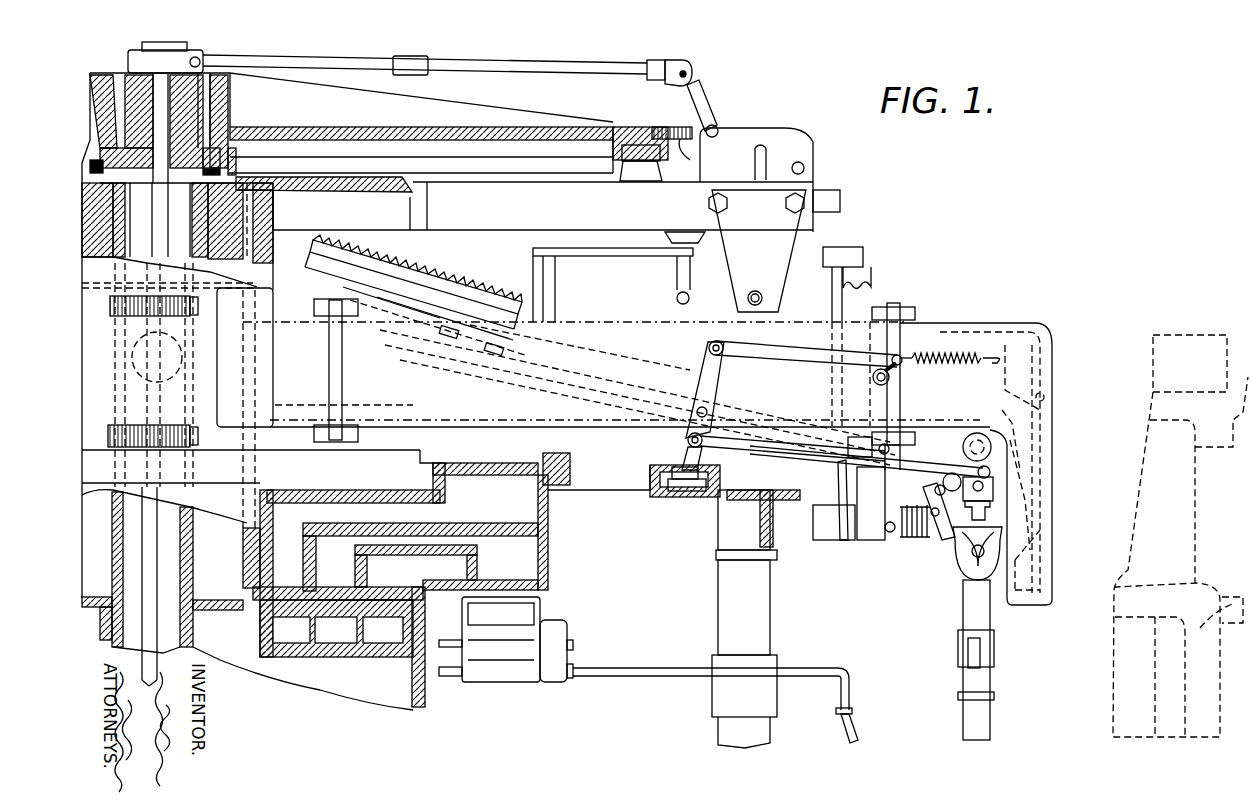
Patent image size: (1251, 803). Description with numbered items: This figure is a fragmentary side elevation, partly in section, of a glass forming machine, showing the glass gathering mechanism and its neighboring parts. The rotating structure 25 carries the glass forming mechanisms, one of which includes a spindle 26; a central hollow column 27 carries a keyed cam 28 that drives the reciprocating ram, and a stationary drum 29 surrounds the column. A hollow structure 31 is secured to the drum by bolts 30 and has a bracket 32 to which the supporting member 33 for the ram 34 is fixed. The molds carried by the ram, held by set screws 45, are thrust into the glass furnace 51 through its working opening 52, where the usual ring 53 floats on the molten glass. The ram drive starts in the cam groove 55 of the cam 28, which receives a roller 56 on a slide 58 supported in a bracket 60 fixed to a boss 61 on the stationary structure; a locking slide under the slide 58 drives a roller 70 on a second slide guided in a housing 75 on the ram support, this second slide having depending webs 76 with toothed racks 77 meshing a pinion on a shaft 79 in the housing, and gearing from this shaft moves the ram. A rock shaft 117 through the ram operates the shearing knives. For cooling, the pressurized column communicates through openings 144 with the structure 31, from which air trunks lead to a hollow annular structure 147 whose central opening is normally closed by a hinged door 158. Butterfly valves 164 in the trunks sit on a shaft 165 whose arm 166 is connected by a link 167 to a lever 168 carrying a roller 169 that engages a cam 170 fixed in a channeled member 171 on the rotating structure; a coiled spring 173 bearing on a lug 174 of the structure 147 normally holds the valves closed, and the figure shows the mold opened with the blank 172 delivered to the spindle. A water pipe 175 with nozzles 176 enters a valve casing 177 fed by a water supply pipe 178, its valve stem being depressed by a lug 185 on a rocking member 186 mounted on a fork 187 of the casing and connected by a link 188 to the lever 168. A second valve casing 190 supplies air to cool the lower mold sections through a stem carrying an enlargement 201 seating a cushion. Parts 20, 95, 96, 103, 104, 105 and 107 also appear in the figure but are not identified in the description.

The pin 20 is at (924, 519).
The rotating structure 25 is at (549, 565).
The spindle 26 is at (970, 608).
The central hollow column 27 is at (110, 548).
The cam 28 is at (345, 95).
The stationary drum 29 is at (250, 468).
The bolts 30 is at (198, 303).
The hollow structure 31 is at (233, 310).
The bracket 32 is at (382, 395).
The supporting member 33 is at (469, 368).
The ram 34 is at (405, 300).
The set screws 45 is at (991, 432).
The glass furnace 51 is at (1120, 667).
The working opening 52 is at (1178, 514).
The ring 53 is at (1179, 667).
The cam groove 55 is at (630, 152).
The roller 56 is at (633, 153).
The slide 58 is at (833, 203).
The bracket 60 is at (284, 177).
The boss 61 is at (245, 192).
The roller 70 is at (677, 232).
The housing 75 is at (822, 258).
The depending webs 76 is at (851, 262).
The toothed racks 77 is at (876, 275).
The shaft 79 is at (676, 299).
The bracket 95 is at (780, 138).
The pivot pin 96 is at (716, 128).
The link 103 is at (702, 88).
The clevis 104 is at (690, 66).
The rod 105 is at (480, 62).
The spring clip 107 is at (655, 136).
The rock shaft 117 is at (340, 283).
The openings 144 is at (250, 357).
The hollow annular structure 147 is at (1022, 418).
The door 158 is at (1050, 460).
The butterfly valves 164 is at (917, 323).
The shaft 165 is at (902, 357).
The arm 166 is at (890, 377).
The link 167 is at (797, 352).
The lever 168 is at (713, 382).
The roller 169 is at (690, 470).
The cam 170 is at (700, 492).
The channeled member 171 is at (650, 478).
The blank 172 is at (980, 513).
The coiled spring 173 is at (963, 353).
The lug 174 is at (998, 358).
The water pipe 175 is at (880, 530).
The nozzles 176 is at (952, 540).
The valve casing 177 is at (900, 535).
The water supply pipe 178 is at (917, 530).
The lug 185 is at (905, 497).
The rocking member 186 is at (872, 475).
The fork 187 is at (870, 490).
The link 188 is at (792, 443).
The valve casing 190 is at (833, 540).
The enlargement 201 is at (917, 540).